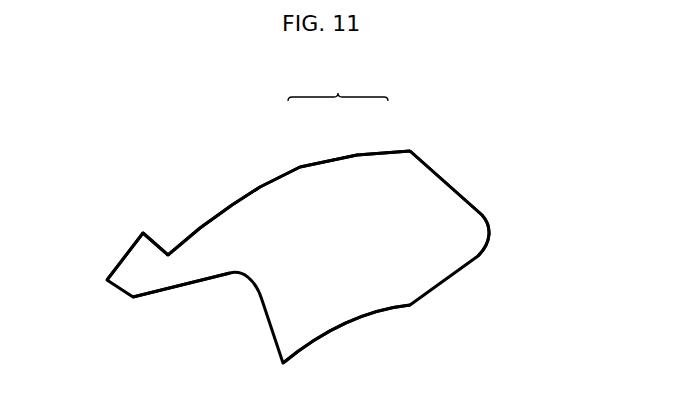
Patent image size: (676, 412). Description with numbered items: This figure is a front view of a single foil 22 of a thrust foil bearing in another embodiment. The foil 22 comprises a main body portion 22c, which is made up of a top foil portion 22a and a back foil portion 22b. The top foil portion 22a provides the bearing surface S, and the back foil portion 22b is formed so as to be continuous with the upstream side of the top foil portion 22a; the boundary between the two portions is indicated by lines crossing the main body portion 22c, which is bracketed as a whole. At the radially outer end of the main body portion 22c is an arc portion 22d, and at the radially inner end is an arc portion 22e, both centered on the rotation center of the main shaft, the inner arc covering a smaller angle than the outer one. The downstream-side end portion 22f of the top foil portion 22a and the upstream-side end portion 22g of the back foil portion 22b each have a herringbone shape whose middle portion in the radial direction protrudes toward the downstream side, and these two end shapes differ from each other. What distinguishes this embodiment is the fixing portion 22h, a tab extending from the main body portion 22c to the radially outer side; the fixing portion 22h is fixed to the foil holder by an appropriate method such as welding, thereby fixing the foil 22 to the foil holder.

The foil 22 is at (472, 158).
The top foil portion 22a is at (398, 195).
The back foil portion 22b is at (285, 247).
The main body portion 22c is at (338, 84).
The arc portion 22d is at (232, 205).
The arc portion 22e is at (345, 320).
The downstream-side end portion 22f is at (482, 257).
The upstream-side end portion 22g is at (185, 282).
The fixing portion 22h is at (135, 263).
The bearing surface S is at (435, 227).